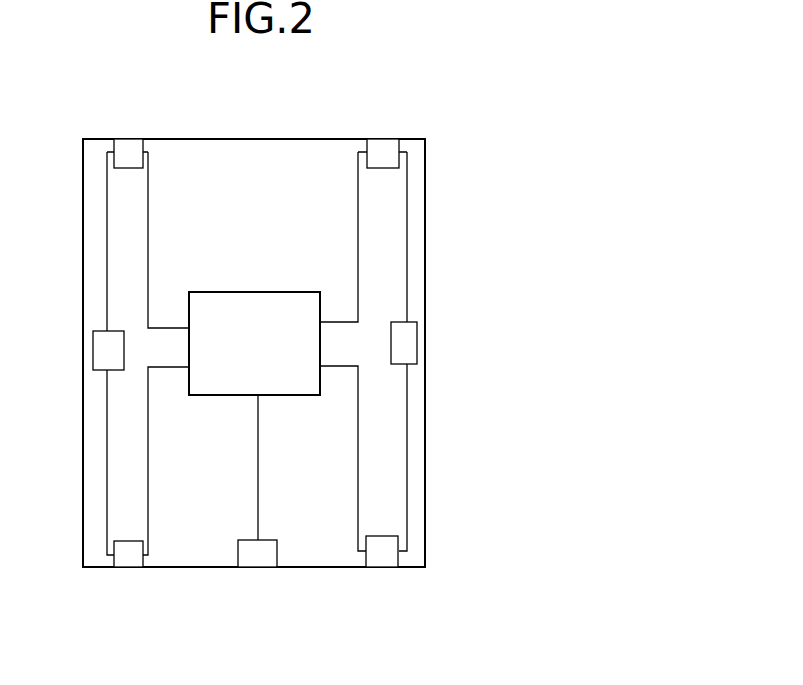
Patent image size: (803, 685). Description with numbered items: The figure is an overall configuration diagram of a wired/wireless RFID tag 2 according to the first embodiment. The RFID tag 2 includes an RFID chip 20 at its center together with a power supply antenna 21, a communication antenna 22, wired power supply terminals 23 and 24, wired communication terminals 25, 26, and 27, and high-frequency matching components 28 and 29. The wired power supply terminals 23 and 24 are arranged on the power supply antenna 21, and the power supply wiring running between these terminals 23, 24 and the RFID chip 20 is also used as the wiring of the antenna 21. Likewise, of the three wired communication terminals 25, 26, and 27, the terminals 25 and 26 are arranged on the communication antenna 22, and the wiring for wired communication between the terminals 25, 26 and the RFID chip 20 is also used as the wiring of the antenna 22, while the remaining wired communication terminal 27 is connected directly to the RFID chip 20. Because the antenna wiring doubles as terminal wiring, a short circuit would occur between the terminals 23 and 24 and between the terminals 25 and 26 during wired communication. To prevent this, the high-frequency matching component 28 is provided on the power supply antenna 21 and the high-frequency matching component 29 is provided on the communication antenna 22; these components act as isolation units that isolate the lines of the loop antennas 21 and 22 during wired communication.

The RFID tag 2 is at (319, 139).
The RFID chip 20 is at (289, 397).
The power supply antenna 21 is at (408, 236).
The communication antenna 22 is at (107, 460).
The wired power supply terminal 23 is at (392, 148).
The wired power supply terminal 24 is at (388, 553).
The wired communication terminal 25 is at (120, 152).
The wired communication terminal 26 is at (120, 562).
The wired communication terminal 27 is at (254, 567).
The high-frequency matching component 28 is at (412, 340).
The high-frequency matching component 29 is at (100, 350).